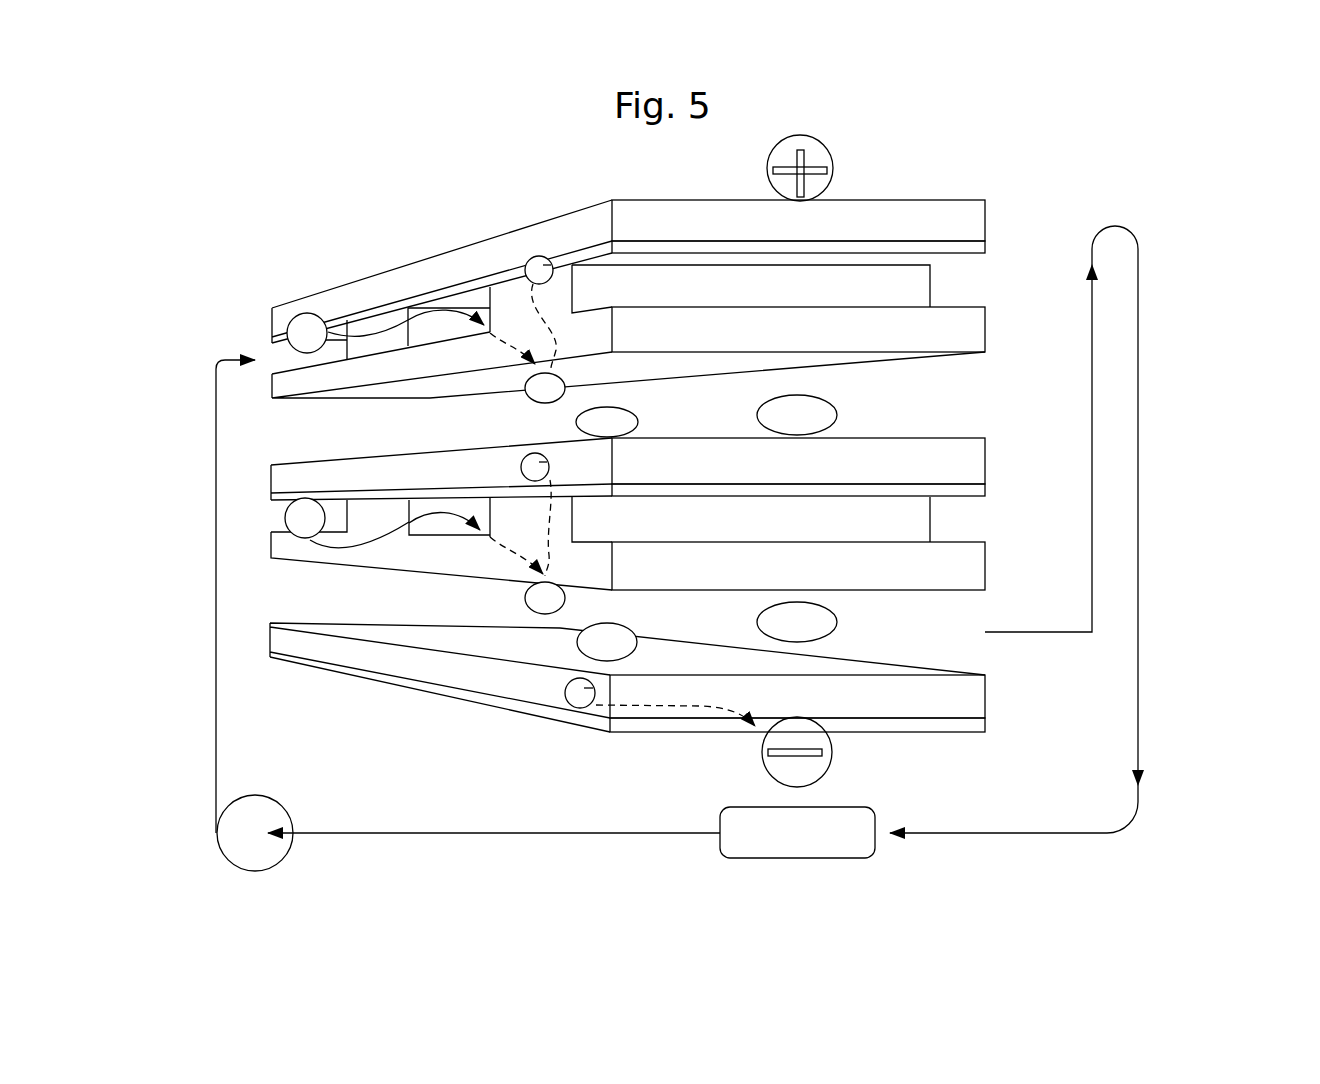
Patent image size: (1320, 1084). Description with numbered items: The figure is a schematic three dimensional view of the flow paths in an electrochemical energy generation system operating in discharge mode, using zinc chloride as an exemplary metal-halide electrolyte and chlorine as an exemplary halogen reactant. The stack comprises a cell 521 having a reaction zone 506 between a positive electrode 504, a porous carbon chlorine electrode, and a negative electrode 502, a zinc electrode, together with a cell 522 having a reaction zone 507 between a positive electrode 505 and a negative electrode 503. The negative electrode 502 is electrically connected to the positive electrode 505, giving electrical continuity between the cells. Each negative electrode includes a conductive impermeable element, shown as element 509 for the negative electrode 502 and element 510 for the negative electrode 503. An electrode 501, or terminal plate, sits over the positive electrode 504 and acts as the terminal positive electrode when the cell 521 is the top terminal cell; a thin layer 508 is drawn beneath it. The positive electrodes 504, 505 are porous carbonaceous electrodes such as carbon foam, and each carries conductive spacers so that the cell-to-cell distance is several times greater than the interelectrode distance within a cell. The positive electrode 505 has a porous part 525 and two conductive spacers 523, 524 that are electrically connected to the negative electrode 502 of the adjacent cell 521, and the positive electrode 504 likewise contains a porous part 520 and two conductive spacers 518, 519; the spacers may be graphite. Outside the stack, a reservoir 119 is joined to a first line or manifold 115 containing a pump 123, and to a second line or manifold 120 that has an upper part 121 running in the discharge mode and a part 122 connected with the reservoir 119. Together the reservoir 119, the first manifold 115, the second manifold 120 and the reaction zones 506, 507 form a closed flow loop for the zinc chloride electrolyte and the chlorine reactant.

The electrode or terminal plate 501 is at (985, 218).
The substrate layer (first cell) 508 is at (985, 250).
The positive electrode 504 is at (995, 260).
The reaction zone 506 is at (935, 408).
The conductive spacer 518 is at (373, 335).
The conductive spacer 519 is at (515, 298).
The porous part 520 is at (466, 366).
The negative electrode 502 is at (985, 462).
The conductive impermeable element 509 is at (985, 490).
The positive electrode 505 is at (995, 497).
The reaction zone 507 is at (935, 634).
The conductive spacer 523 is at (369, 515).
The conductive spacer 524 is at (518, 518).
The porous part 525 is at (466, 567).
The negative electrode 503 is at (985, 693).
The conductive impermeable element 510 is at (985, 726).
The cell 521 is at (198, 343).
The cell 522 is at (198, 502).
The first line or manifold 115 is at (216, 735).
The reservoir 119 is at (807, 858).
The second line or manifold 120 is at (1214, 400).
The upper part of second manifold 121 is at (1092, 417).
The part of second manifold 122 is at (1138, 458).
The pump 123 is at (287, 808).